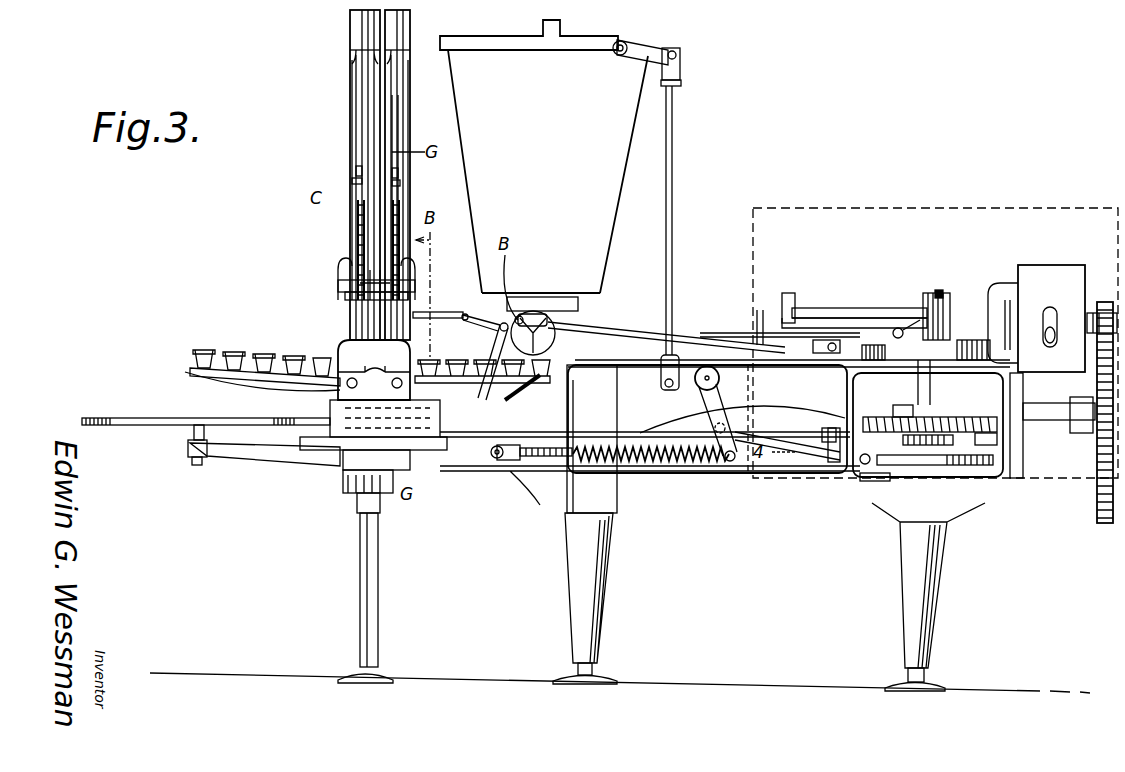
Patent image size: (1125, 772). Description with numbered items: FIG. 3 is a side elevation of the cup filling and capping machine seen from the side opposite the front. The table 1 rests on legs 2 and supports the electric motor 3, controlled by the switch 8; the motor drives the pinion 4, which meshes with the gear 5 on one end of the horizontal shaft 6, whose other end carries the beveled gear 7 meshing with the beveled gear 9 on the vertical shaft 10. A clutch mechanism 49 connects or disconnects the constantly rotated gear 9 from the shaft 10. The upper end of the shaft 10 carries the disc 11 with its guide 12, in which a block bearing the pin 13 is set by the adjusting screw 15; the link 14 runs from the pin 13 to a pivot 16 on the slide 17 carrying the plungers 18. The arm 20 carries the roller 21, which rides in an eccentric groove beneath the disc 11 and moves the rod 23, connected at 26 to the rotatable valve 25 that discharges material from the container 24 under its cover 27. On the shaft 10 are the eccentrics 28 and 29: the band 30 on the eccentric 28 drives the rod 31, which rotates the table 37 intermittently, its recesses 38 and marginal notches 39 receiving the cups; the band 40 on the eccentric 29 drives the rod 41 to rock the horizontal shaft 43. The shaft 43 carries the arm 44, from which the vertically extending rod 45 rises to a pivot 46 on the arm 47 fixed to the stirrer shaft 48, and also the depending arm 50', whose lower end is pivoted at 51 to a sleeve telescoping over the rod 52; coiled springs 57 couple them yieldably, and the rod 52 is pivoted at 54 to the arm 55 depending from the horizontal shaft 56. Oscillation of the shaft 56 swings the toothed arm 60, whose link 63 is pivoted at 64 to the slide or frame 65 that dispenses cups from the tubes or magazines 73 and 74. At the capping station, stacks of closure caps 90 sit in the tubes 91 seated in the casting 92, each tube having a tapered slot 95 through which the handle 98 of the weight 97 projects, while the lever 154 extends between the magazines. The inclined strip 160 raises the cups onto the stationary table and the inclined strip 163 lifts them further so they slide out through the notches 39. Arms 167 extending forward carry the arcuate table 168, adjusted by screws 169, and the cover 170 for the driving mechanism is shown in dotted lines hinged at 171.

The table 1 is at (605, 497).
The legs 2 is at (596, 590).
The electric motor 3 is at (1005, 283).
The pinion 4 is at (1100, 313).
The gear 5 is at (508, 462).
The horizontal shaft 6 is at (1056, 420).
The beveled gear 7 is at (984, 433).
The switch 8 is at (1050, 328).
The beveled gear 9 is at (945, 435).
The vertical shaft 10 is at (931, 395).
The disc 11 is at (1000, 290).
The guide 12 is at (932, 300).
The vertically extending pin 13 is at (940, 292).
The link 14 is at (838, 308).
The adjusting screw 15 is at (842, 345).
The pivotal connection 16 is at (792, 300).
The slide 17 is at (767, 320).
The plungers 18 is at (678, 340).
The arm 20 is at (960, 340).
The roller 21 is at (899, 328).
The rod 23 is at (720, 333).
The container 24 is at (595, 238).
The rotatable valve 25 is at (565, 325).
The valve connection 26 is at (528, 320).
The cover 27 is at (508, 42).
The eccentric 28 is at (960, 456).
The eccentric 29 is at (960, 478).
The band or ring 30 is at (893, 412).
The rod 31 is at (612, 432).
The rotatable table 37 is at (190, 362).
The recesses 38 is at (246, 352).
The notches 39 is at (205, 350).
The band or ring 40 is at (880, 480).
The rod 41 is at (792, 452).
The horizontal shaft 43 is at (708, 366).
The arm or projection 44 is at (661, 385).
The vertically extending rod 45 is at (673, 185).
The pivotal connection 46 is at (680, 55).
The arm 47 is at (645, 48).
The shaft 48 is at (621, 41).
The clutch mechanism 49 is at (900, 417).
The arm 50' is at (742, 420).
The pivotal connection 51 is at (725, 462).
The rod 52 is at (541, 475).
The pivotal connection 54 is at (497, 458).
The arm 55 is at (478, 462).
The horizontal shaft 56 is at (522, 392).
The coiled springs 57 is at (640, 460).
The arm 60 is at (485, 358).
The link 63 is at (481, 311).
The pivotal connection 64 is at (447, 310).
The slide or frame 65 is at (440, 305).
The tube or magazine 73 is at (404, 32).
The tube or magazine 74 is at (358, 38).
The closure caps 90 is at (395, 236).
The tubes or magazines 91 is at (352, 130).
The casting 92 is at (345, 343).
The tapered slot 95 is at (393, 102).
The weight 97 is at (357, 170).
The handle 98 is at (353, 181).
The lever 154 is at (345, 280).
The inclined plate or strip 160 is at (373, 456).
The plate or strip 163 is at (228, 380).
The arms 167 is at (256, 462).
The arcuate-shaped table 168 is at (143, 418).
The screws 169 is at (194, 466).
The cover 170 is at (893, 215).
The pivotal connection 171 is at (1022, 480).